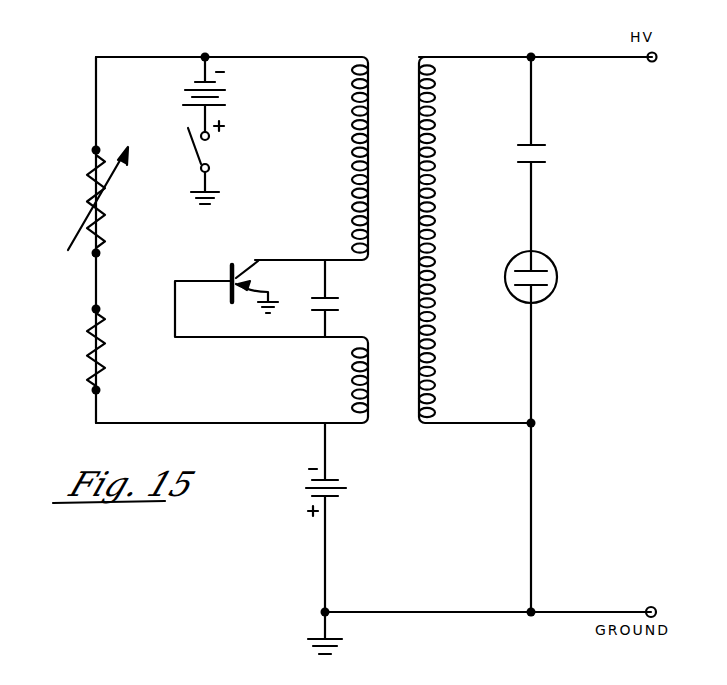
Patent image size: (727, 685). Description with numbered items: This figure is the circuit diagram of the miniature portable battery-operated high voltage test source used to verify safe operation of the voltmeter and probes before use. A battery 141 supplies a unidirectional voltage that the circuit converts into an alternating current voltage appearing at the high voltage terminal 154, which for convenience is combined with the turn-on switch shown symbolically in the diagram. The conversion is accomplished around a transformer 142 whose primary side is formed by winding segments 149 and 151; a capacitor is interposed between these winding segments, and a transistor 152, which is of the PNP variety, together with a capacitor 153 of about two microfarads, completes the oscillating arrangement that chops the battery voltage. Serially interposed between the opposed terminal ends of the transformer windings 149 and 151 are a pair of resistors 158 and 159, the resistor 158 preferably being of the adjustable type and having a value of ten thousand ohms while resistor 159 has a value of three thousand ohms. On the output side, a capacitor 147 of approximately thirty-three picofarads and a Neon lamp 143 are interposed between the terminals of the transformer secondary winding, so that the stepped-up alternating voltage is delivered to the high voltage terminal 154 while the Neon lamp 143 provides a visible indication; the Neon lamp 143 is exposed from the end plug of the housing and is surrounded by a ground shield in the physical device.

The battery 141 is at (178, 93).
The transformer 142 is at (397, 62).
The Neon lamp 143 is at (556, 274).
The capacitor 147 is at (566, 151).
The transformer winding segment 149 is at (355, 181).
The transformer winding segment 151 is at (352, 383).
The transistor 152 is at (274, 250).
The capacitor 153 is at (338, 488).
The high voltage terminal 154 is at (191, 155).
The resistor 158 is at (92, 167).
The resistor 159 is at (91, 380).